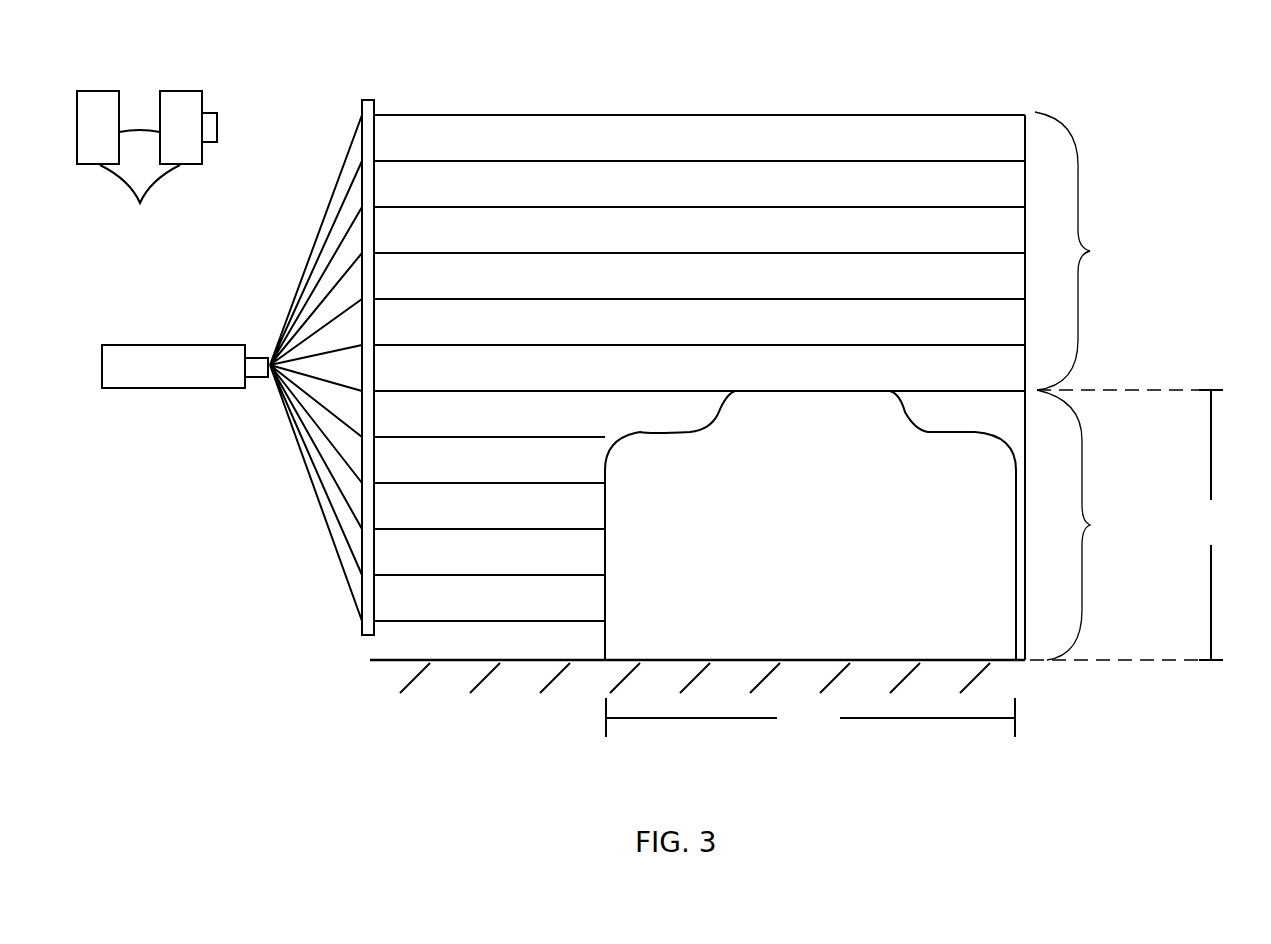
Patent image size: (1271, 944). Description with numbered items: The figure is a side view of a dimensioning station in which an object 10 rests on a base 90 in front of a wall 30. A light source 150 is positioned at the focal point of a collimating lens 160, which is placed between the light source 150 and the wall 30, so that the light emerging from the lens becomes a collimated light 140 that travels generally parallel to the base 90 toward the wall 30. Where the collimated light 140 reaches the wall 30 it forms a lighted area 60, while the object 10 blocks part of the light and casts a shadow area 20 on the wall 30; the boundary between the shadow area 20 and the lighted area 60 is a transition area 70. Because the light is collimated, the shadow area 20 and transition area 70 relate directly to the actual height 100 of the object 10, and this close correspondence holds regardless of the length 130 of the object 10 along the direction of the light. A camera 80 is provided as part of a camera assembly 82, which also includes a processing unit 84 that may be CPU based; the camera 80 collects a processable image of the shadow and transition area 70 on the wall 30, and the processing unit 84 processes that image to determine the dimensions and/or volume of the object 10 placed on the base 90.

The object 10 is at (922, 430).
The shadow area 20 is at (1082, 525).
The wall 30 is at (1025, 145).
The lighted area 60 is at (1081, 251).
The transition area 70 is at (1037, 390).
The camera 80 is at (180, 91).
The camera assembly 82 is at (140, 199).
The processing unit 84 is at (98, 127).
The base 90 is at (518, 663).
The actual height 100 is at (1129, 525).
The length 130 is at (810, 717).
The collimated light 140 is at (700, 114).
The light source 150 is at (172, 345).
The collimating lens 160 is at (368, 100).